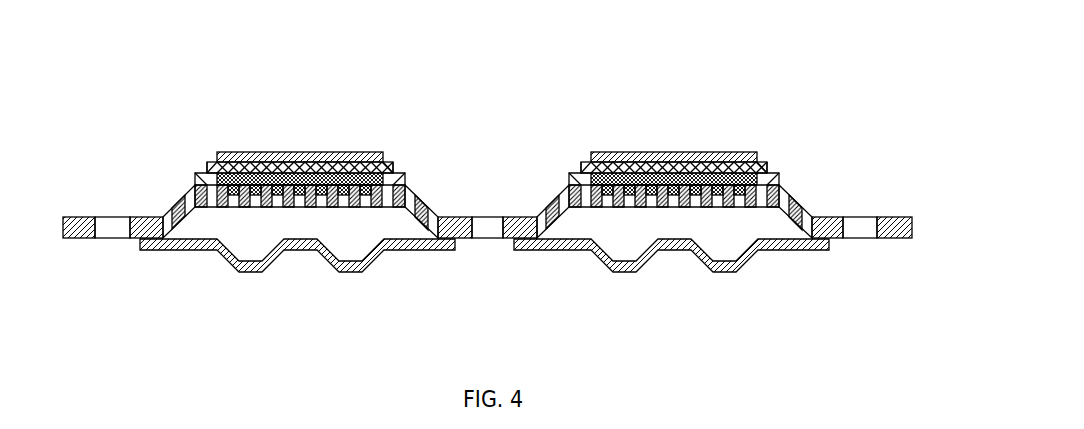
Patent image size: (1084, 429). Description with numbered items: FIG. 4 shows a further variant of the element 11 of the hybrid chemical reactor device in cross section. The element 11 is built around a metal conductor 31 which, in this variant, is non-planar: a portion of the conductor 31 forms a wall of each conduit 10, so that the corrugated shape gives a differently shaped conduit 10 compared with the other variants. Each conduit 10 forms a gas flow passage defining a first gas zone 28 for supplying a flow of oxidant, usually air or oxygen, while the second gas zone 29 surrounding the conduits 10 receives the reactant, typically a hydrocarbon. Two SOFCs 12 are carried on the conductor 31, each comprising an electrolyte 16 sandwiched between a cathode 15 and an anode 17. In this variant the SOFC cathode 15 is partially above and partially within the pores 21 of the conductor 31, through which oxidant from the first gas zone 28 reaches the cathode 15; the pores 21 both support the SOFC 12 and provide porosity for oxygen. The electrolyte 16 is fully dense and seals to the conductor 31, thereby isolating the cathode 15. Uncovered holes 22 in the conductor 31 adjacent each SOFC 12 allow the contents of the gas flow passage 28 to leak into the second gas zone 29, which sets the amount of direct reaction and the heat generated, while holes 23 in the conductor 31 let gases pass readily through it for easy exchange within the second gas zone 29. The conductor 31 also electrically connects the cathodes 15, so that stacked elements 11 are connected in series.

The element 11 is at (170, 71).
The SOFC 12 is at (90, 192).
The anode layer 17 is at (218, 154).
The electrolyte layer 16 is at (212, 168).
The cathode layer 15 is at (200, 179).
The second gas zone 29 is at (501, 133).
The first gas zone 28 is at (364, 237).
The pores 21 is at (740, 201).
The conductor 31 is at (898, 225).
The holes 22 is at (166, 222).
The holes 23 is at (483, 230).
The conduit 10 is at (748, 262).